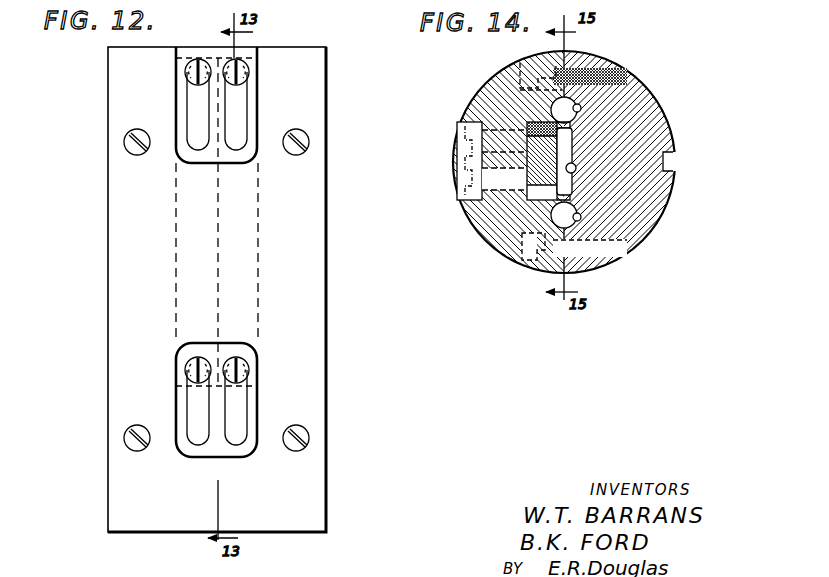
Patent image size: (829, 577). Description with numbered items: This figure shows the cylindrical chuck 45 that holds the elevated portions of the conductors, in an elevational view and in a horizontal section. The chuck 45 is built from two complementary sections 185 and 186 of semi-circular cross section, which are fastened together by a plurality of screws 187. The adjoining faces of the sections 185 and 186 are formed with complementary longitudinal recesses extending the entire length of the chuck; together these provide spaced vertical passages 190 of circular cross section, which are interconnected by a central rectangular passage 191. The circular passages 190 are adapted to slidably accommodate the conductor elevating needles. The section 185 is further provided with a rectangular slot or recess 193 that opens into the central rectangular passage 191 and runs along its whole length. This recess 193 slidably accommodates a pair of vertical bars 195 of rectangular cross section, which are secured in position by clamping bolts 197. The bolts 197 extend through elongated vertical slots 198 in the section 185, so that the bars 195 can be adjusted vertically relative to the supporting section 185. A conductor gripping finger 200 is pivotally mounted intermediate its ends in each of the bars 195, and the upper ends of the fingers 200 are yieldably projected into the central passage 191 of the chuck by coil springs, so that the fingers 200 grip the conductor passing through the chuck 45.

In FIG. 12, the cylindrical chuck 45 is at (105, 318).
In FIG. 14, the cylindrical chuck 45 is at (632, 69).
In FIG. 12, the chuck section 185 is at (143, 378).
In FIG. 14, the chuck section 185 is at (518, 220).
In FIG. 14, the chuck section 186 is at (651, 230).
In FIG. 12, the screws 187 is at (294, 155).
In FIG. 14, the screws 187 is at (537, 262).
In FIG. 14, the vertical passages 190 is at (582, 113).
In FIG. 14, the central rectangular passage 191 is at (574, 168).
In FIG. 14, the rectangular slot or recess 193 is at (522, 145).
In FIG. 12, the vertical bars 195 is at (218, 230).
In FIG. 14, the vertical bars 195 is at (520, 85).
In FIG. 12, the clamping bolts 197 is at (234, 58).
In FIG. 14, the clamping bolts 197 is at (470, 160).
In FIG. 12, the elongated vertical slots 198 is at (226, 119).
In FIG. 14, the conductor gripping finger 200 is at (573, 150).